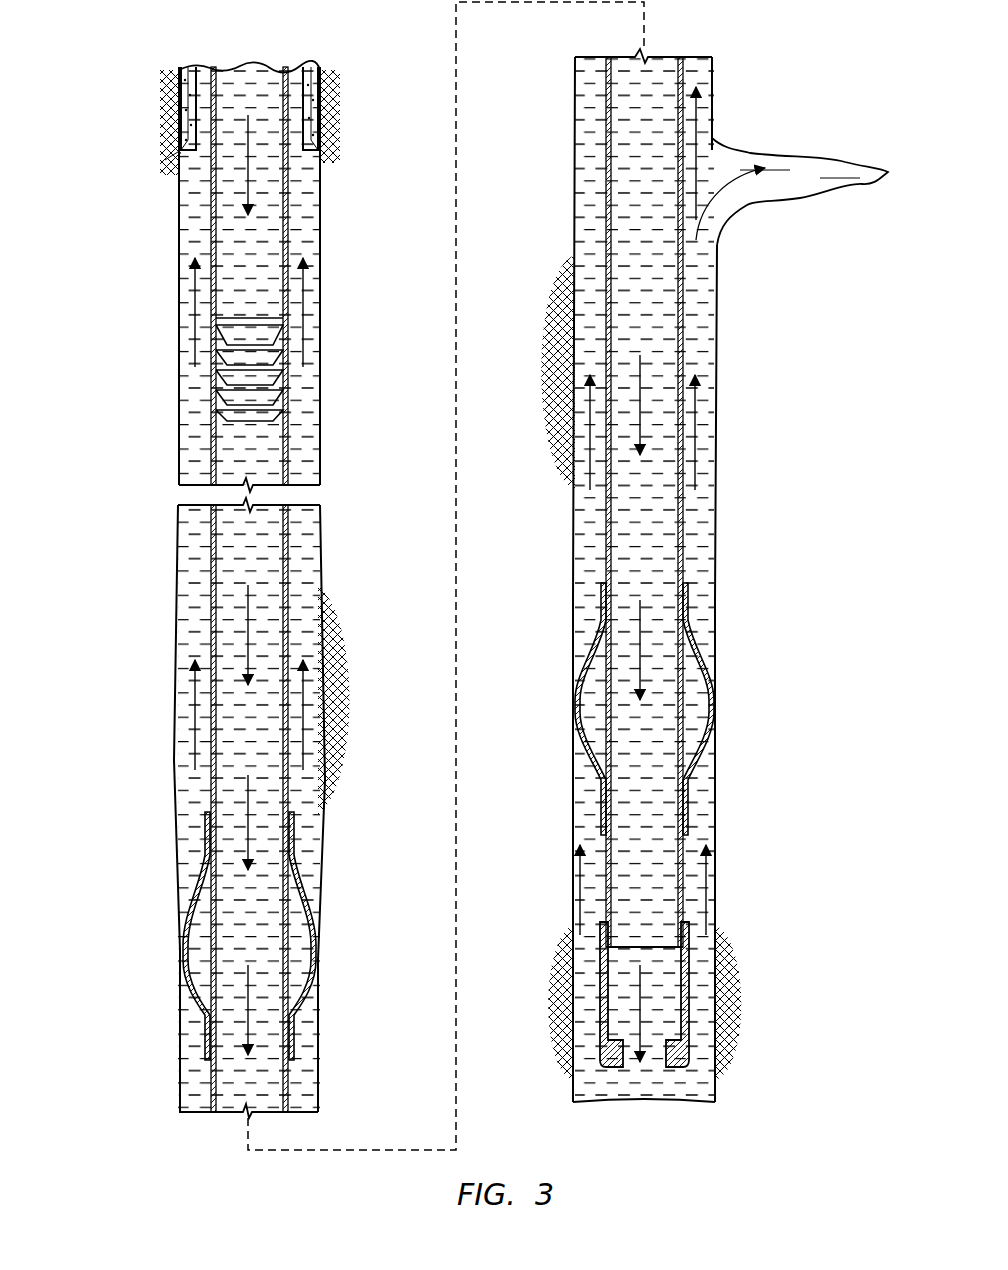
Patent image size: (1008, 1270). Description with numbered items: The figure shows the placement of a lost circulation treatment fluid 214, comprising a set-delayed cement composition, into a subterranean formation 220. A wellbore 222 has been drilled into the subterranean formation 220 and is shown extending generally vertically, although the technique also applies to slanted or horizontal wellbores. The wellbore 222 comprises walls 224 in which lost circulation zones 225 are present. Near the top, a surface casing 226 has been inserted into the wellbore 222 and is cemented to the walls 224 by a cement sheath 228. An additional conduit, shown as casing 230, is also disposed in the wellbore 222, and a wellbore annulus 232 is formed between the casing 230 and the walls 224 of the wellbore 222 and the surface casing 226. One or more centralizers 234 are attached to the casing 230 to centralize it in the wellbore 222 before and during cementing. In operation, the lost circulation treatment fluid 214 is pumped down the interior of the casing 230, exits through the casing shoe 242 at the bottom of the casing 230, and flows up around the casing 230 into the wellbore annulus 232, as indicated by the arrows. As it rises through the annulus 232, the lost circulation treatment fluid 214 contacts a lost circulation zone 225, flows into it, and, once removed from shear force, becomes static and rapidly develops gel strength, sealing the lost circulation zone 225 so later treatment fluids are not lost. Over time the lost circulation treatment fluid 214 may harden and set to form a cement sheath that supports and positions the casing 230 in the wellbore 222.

The lost circulation treatment fluid 214 is at (250, 165).
The subterranean formation 220 is at (806, 96).
The wellbore 222 is at (175, 970).
The walls 224 is at (179, 423).
The lost circulation zone 225 is at (805, 200).
The surface casing 226 is at (185, 90).
The cement sheath 228 is at (190, 115).
The casing 230 is at (210, 625).
The wellbore annulus 232 is at (192, 813).
The centralizers 234 is at (705, 652).
The casing shoe 242 is at (690, 977).